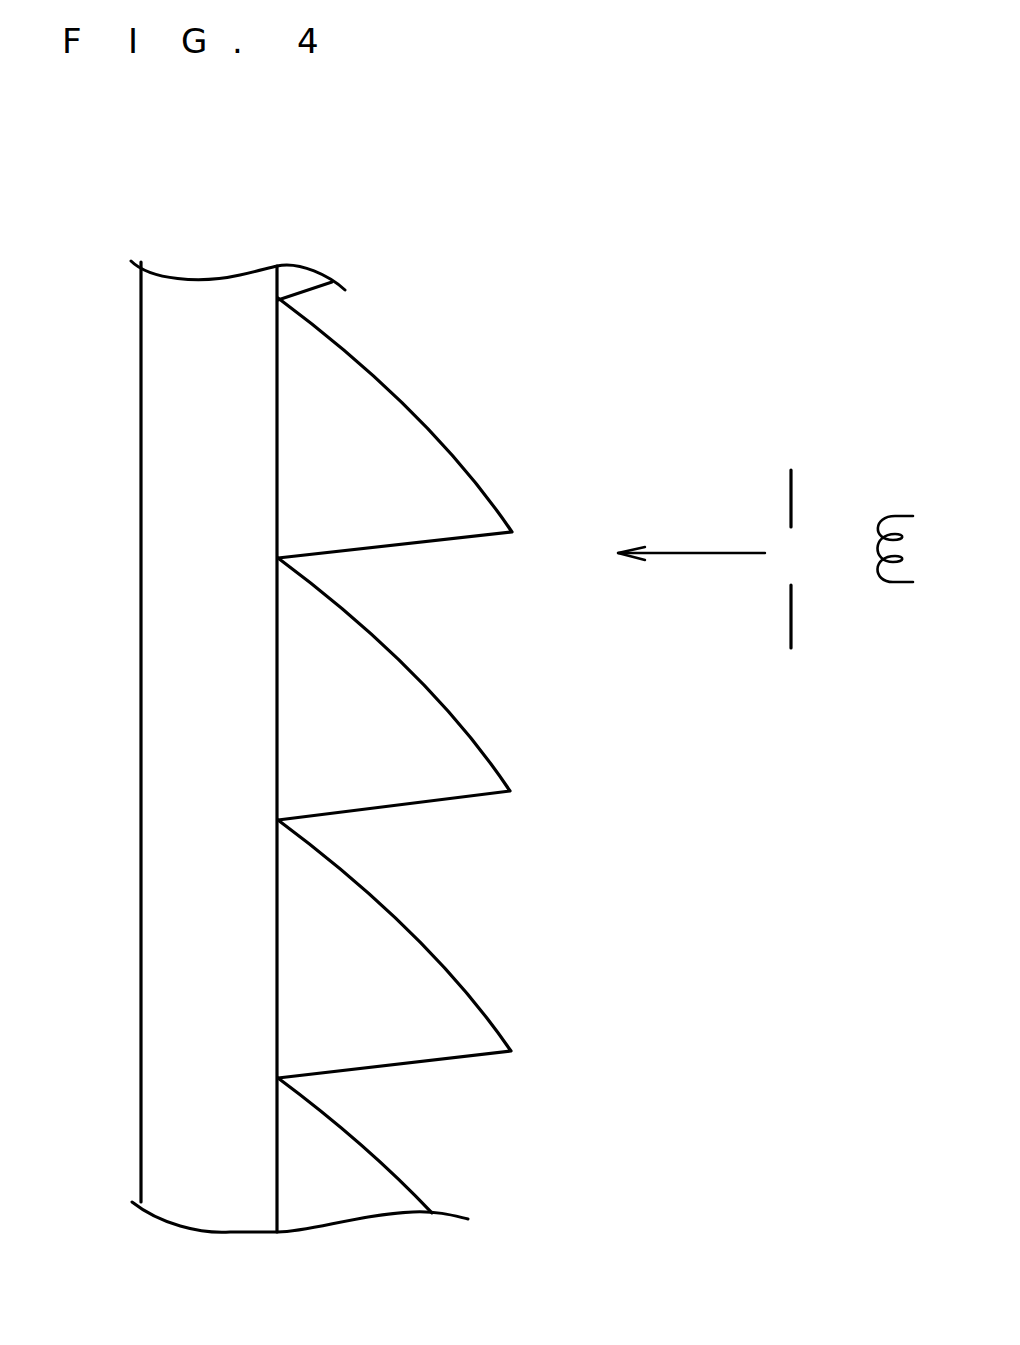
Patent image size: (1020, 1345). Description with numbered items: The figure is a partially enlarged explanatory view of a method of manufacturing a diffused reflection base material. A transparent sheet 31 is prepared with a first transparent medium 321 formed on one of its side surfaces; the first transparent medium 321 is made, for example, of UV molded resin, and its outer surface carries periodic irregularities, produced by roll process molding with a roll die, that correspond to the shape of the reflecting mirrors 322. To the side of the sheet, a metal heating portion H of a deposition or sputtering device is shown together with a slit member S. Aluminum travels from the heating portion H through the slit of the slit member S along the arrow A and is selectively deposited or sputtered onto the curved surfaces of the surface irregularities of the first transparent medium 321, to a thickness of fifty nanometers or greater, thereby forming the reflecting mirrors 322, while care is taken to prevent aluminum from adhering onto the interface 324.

The transparent sheet 31 is at (153, 1078).
The first transparent medium 321 is at (398, 1197).
The reflecting mirrors 322 is at (472, 732).
The interface 324 is at (413, 802).
The direction of travel of aluminum A is at (697, 553).
The slit member S is at (795, 487).
The metal heating portion H is at (902, 510).